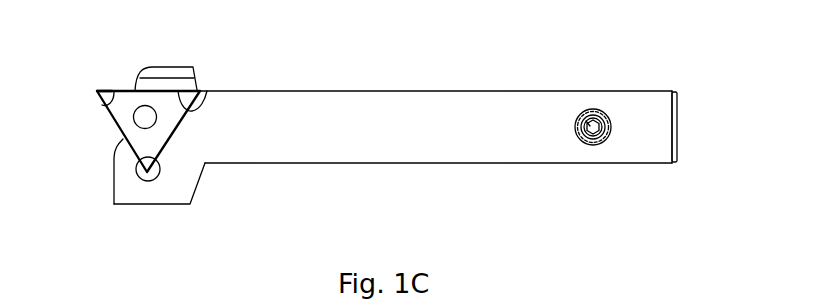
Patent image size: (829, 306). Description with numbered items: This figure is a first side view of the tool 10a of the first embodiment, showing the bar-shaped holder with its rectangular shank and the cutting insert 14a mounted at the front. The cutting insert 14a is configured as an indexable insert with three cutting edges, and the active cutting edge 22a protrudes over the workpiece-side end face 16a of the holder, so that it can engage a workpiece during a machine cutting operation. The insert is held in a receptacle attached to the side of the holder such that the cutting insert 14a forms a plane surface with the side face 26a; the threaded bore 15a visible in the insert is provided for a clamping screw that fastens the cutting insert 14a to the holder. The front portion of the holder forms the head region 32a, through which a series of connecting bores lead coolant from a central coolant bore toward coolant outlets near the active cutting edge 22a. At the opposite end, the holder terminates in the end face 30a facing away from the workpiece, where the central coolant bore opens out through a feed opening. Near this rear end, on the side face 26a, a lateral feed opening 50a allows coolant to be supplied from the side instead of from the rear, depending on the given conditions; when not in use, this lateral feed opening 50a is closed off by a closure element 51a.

The tool 10a is at (683, 74).
The cutting insert 14a is at (128, 112).
The threaded bore 15a is at (138, 108).
The workpiece-side end face 16a is at (114, 158).
The active cutting edge 22a is at (99, 91).
The side face 26a is at (412, 105).
The end face facing away from the workpiece 30a is at (677, 137).
The head region 32a is at (190, 205).
The lateral feed opening 50a is at (577, 138).
The closure element 51a is at (587, 115).